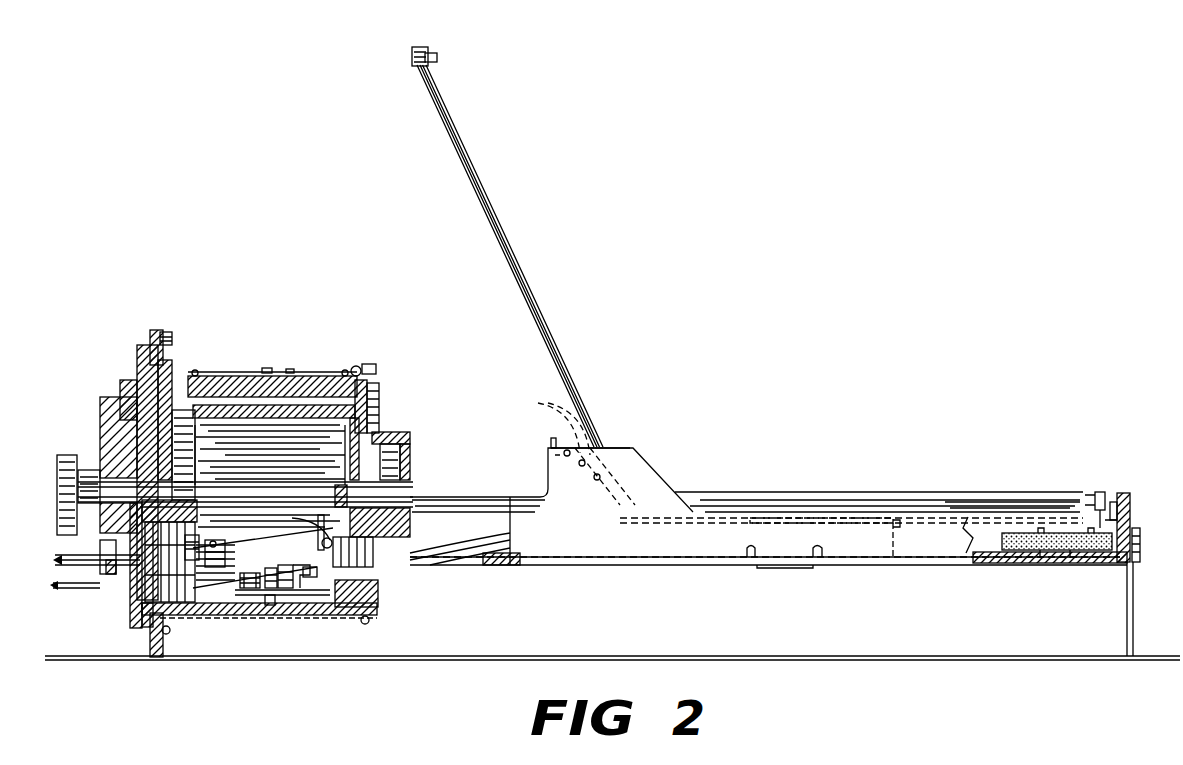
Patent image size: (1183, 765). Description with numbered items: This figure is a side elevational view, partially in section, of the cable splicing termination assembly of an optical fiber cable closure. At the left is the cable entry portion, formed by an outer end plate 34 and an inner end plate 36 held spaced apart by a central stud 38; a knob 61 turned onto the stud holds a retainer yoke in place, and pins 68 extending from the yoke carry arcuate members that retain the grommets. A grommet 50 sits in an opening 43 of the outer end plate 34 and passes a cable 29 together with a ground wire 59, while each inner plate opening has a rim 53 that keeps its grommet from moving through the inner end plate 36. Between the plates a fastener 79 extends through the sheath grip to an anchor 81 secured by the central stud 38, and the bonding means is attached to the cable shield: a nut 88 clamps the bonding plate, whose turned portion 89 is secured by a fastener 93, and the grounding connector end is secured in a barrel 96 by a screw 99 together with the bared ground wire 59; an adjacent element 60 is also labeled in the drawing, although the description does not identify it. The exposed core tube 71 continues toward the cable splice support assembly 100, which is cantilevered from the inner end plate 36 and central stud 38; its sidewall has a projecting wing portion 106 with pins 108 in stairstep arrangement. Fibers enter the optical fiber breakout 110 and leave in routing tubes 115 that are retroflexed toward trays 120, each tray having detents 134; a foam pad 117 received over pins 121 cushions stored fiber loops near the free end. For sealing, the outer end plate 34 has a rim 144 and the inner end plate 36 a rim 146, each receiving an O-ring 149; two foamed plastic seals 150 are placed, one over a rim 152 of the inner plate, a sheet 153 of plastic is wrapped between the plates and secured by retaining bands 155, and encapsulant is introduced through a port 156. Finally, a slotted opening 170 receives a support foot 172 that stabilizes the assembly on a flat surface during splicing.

The cable 29 is at (66, 556).
The outer end plate 34 is at (146, 650).
The inner end plate 36 is at (372, 621).
The central stud 38 is at (258, 490).
The opening 43 is at (194, 535).
The grommet 50 is at (130, 593).
The rim 53 is at (378, 588).
The ground wire 59 is at (82, 590).
The brush 60 is at (270, 605).
The knob 61 is at (67, 455).
The pins 68 is at (150, 430).
The core tube 71 is at (461, 553).
The fastener 79 is at (353, 551).
The anchor 81 is at (293, 520).
The nut 88 is at (323, 565).
The turned portion 89 is at (287, 590).
The fastener 93 is at (312, 580).
The barrel 96 is at (247, 592).
The screw 99 is at (268, 590).
The cable splice support assembly 100 is at (692, 582).
The projecting wing portion 106 is at (614, 456).
The pins 108 is at (540, 404).
The optical fiber breakout 110 is at (848, 556).
The routing tubes 115 is at (985, 558).
The foam pad 117 is at (1013, 535).
The tray 120 is at (494, 204).
The pins 121 is at (1040, 558).
The detents 134 is at (432, 52).
The rim 144 is at (178, 372).
The rim 146 is at (362, 371).
The O-ring 149 is at (170, 345).
The foamed plastic seals 150 is at (196, 371).
The rim 152 is at (368, 395).
The sheet 153 is at (232, 376).
The retaining bands 155 is at (292, 371).
The port 156 is at (269, 369).
The slotted opening 170 is at (1129, 530).
The support foot 172 is at (1127, 597).